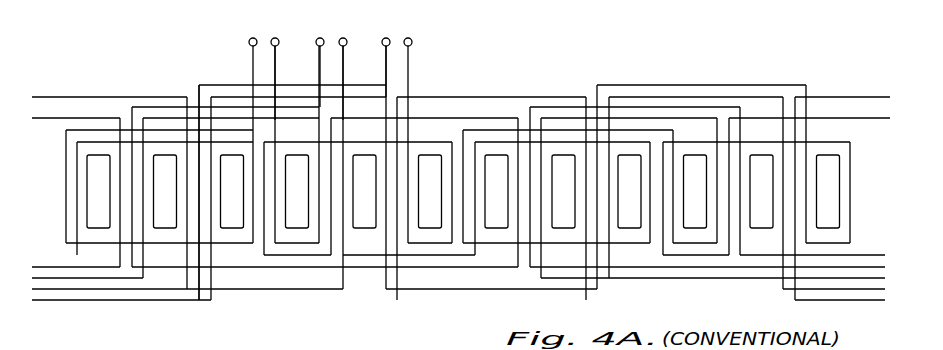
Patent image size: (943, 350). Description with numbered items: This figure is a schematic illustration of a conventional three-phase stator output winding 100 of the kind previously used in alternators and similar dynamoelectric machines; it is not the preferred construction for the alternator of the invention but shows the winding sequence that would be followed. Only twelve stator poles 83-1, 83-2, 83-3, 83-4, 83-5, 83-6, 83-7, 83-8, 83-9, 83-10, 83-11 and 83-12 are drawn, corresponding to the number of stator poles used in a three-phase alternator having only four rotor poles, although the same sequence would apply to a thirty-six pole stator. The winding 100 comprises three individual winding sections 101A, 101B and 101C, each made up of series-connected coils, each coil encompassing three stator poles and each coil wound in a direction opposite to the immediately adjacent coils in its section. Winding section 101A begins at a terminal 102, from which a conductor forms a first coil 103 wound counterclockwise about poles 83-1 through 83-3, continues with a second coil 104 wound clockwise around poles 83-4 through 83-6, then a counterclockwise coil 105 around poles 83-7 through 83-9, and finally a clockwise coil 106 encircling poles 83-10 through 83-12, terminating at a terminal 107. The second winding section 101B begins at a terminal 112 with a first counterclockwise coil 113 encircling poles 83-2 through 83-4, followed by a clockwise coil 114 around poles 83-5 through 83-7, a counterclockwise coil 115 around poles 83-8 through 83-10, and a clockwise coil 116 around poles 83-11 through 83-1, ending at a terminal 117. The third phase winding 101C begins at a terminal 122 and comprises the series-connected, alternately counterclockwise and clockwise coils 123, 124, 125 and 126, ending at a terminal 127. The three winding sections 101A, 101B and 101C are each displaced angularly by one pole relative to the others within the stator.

The stator output winding 100 is at (622, 71).
The winding section 101A is at (275, 59).
The second winding section 101B is at (343, 70).
The third phase winding 101C is at (387, 82).
The terminal 102 is at (274, 37).
The first coil 103 is at (290, 257).
The second coil 104 is at (513, 244).
The coil 105 is at (843, 138).
The clockwise coil 106 is at (93, 242).
The terminal 107 is at (249, 43).
The terminal 112 is at (347, 43).
The first counterclockwise coil 113 is at (461, 271).
The clockwise coil 114 is at (688, 268).
The counterclockwise coil 115 is at (60, 268).
The clockwise coil 116 is at (268, 268).
The terminal 117 is at (320, 37).
The terminal 122 is at (412, 42).
The coil 123 is at (510, 290).
The coil 124 is at (783, 290).
The coil 125 is at (193, 301).
The coil 126 is at (245, 290).
The terminal 127 is at (387, 38).
The stator pole 83-1 is at (297, 191).
The stator pole 83-2 is at (365, 191).
The stator pole 83-3 is at (430, 191).
The stator pole 83-4 is at (497, 191).
The stator pole 83-5 is at (564, 191).
The stator pole 83-6 is at (630, 191).
The stator pole 83-7 is at (695, 191).
The stator pole 83-8 is at (762, 191).
The stator pole 83-9 is at (828, 191).
The stator pole 83-10 is at (99, 191).
The stator pole 83-11 is at (165, 191).
The stator pole 83-12 is at (232, 191).